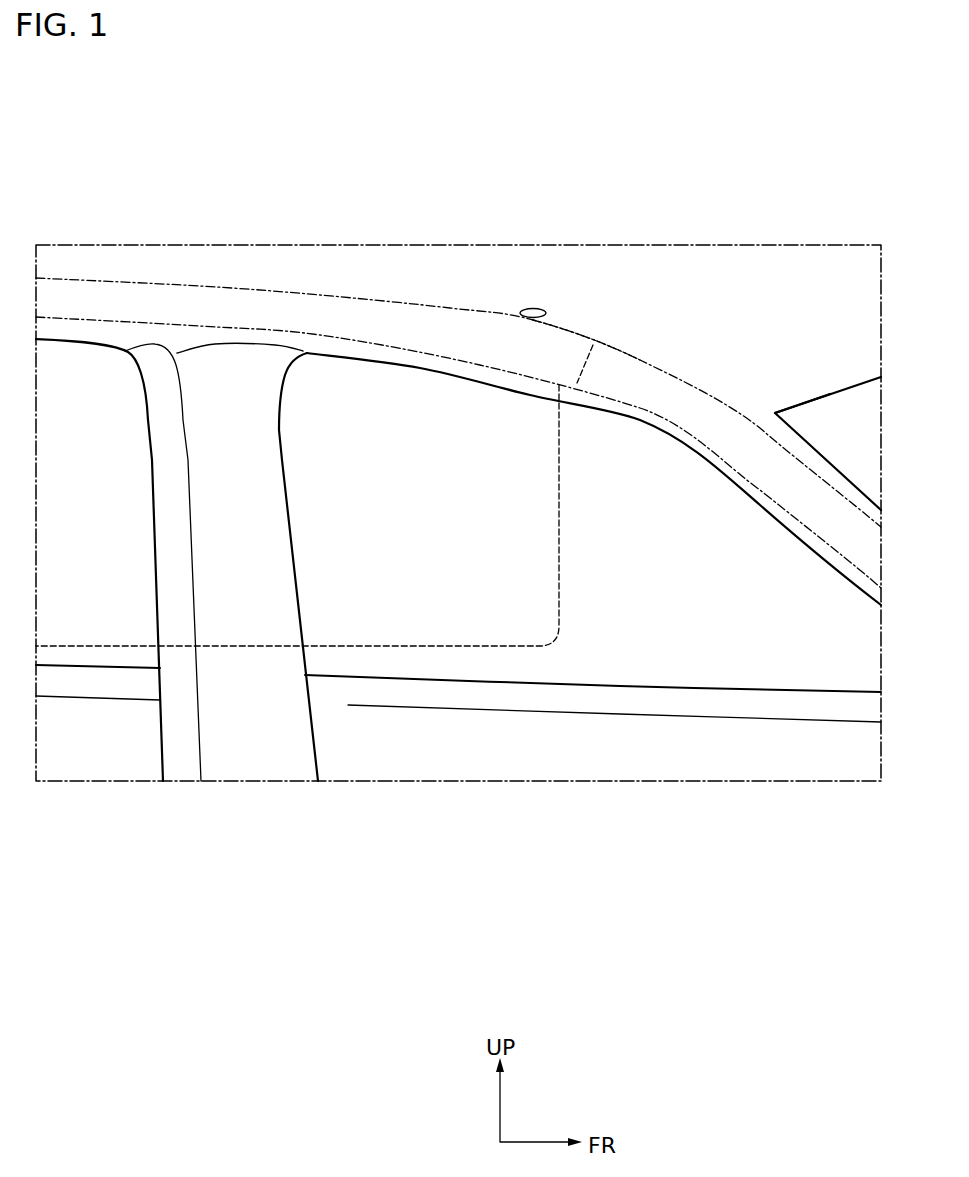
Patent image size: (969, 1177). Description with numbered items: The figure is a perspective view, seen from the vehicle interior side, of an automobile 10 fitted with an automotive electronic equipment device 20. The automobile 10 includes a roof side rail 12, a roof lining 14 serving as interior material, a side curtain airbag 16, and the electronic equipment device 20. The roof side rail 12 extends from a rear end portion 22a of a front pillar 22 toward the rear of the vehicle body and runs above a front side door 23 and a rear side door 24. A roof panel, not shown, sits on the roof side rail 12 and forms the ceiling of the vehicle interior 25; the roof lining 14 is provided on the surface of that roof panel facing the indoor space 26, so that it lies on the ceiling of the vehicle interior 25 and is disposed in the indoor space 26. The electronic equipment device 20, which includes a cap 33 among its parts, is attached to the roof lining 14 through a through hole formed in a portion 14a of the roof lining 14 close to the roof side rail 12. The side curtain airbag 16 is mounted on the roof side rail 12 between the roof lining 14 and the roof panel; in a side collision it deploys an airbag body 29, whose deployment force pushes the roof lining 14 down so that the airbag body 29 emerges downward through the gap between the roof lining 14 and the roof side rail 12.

The automobile 10 is at (153, 203).
The roof side rail 12 is at (290, 287).
The roof lining 14 is at (428, 258).
The portion of the roof lining 14a is at (570, 318).
The side curtain airbag 16 is at (316, 625).
The electronic equipment device 20 is at (580, 230).
The front pillar 22 is at (868, 495).
The rear end portion of the front pillar 22a is at (768, 437).
The front side door 23 is at (680, 752).
The rear side door 24 is at (73, 750).
The vehicle interior 25 is at (335, 648).
The indoor space 26 is at (298, 567).
The airbag body 29 is at (562, 575).
The cap 33 is at (533, 308).